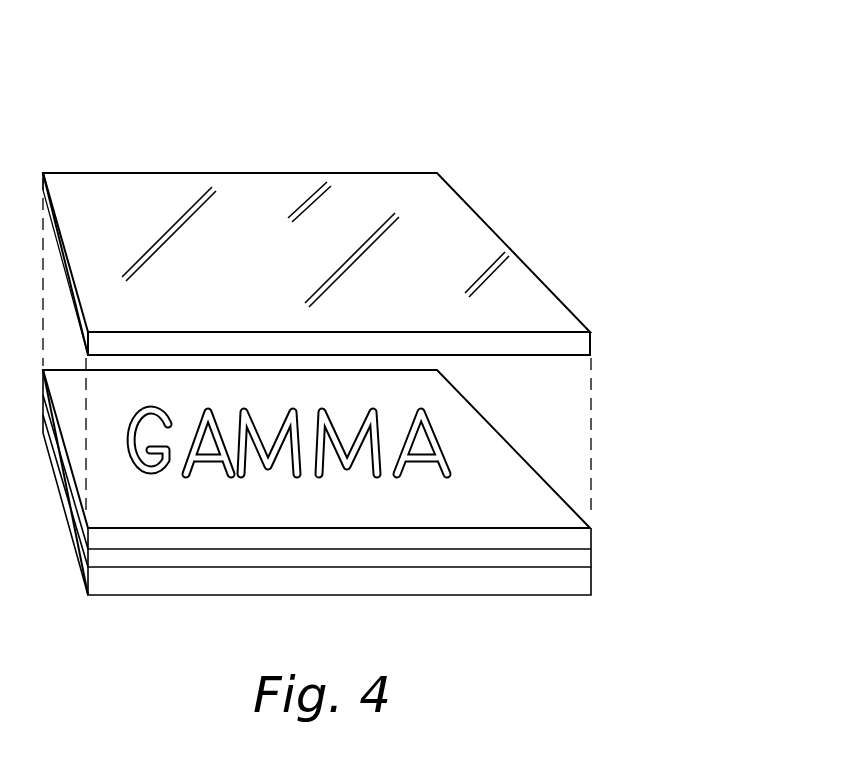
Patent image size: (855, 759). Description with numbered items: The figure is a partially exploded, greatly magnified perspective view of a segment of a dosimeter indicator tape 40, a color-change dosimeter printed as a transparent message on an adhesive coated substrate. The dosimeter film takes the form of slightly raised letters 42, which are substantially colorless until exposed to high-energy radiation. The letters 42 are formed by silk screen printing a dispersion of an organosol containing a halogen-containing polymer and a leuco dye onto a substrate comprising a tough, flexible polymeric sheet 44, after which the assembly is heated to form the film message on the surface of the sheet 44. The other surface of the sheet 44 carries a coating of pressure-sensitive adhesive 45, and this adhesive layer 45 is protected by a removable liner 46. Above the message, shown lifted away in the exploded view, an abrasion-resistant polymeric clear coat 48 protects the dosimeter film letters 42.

The dosimeter indicator tape 40 is at (560, 160).
The raised letters 42 is at (367, 423).
The flexible polymeric sheet 44 is at (592, 536).
The pressure-sensitive adhesive 45 is at (592, 558).
The removable liner 46 is at (592, 580).
The clear coat 48 is at (538, 278).